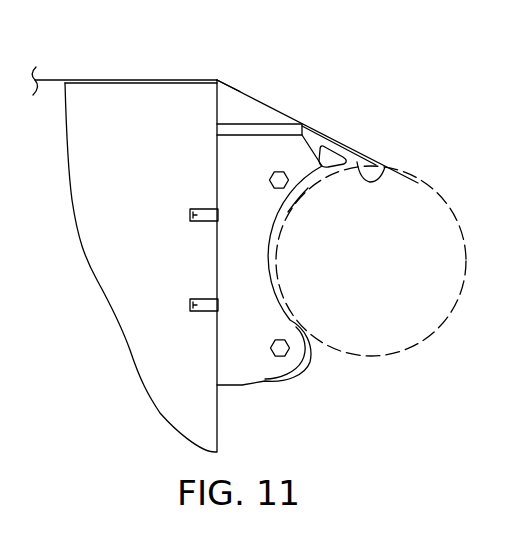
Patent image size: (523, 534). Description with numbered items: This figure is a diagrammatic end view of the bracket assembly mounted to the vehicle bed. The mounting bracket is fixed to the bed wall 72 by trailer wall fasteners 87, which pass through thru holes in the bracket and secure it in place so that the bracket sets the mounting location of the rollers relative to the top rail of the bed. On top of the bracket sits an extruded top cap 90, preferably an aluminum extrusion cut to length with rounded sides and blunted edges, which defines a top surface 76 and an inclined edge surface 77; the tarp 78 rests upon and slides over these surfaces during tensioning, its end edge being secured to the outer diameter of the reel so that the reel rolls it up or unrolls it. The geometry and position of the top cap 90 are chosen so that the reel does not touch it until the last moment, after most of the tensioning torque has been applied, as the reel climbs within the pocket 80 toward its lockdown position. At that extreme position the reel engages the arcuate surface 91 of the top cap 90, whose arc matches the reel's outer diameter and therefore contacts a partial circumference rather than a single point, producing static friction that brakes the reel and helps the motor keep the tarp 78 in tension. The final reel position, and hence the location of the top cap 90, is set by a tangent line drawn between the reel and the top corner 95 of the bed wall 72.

The bed wall 72 is at (218, 418).
The top surface 76 is at (260, 124).
The inclined edge surface 77 is at (342, 145).
The tarp 78 is at (50, 80).
The pocket 80 is at (327, 209).
The trailer wall fasteners 87 is at (205, 298).
The top cap 90 is at (302, 124).
The arcuate surface 91 is at (385, 167).
The top corner 95 is at (217, 80).